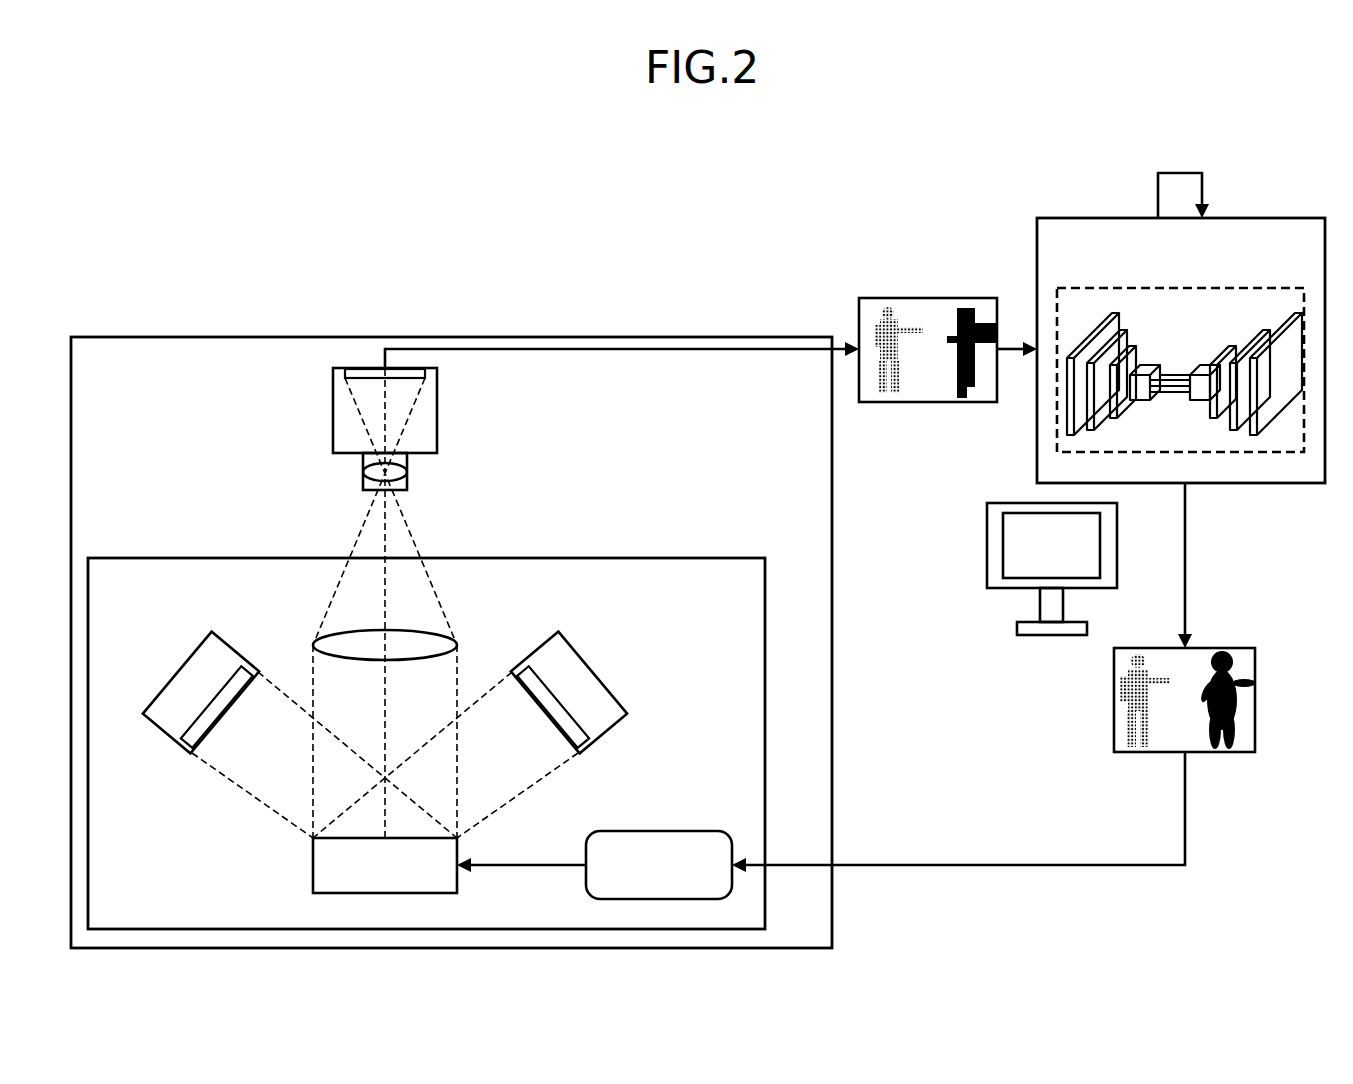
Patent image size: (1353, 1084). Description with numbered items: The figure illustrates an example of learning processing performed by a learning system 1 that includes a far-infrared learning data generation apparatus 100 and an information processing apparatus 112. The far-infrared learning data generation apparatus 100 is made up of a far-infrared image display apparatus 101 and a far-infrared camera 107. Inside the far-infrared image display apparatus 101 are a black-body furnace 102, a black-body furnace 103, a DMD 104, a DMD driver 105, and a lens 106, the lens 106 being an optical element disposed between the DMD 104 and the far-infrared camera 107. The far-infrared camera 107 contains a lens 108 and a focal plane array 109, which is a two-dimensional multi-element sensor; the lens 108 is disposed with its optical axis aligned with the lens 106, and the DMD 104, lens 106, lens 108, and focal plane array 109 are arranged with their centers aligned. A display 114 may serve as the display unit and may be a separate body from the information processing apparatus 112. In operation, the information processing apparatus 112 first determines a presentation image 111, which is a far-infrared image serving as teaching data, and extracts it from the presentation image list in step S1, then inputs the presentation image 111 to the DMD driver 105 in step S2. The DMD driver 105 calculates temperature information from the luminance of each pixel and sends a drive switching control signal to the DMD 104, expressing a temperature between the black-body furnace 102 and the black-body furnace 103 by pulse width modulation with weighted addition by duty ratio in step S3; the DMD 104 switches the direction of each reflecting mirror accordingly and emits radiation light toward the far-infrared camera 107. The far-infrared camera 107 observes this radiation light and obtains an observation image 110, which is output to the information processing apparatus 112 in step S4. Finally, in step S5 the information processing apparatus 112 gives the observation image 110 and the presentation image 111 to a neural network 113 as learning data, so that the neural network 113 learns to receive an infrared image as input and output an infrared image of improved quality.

The learning system 1 is at (658, 293).
The far-infrared learning data generation apparatus 100 is at (231, 337).
The far-infrared image display apparatus 101 is at (248, 558).
The black-body furnace 102 is at (178, 670).
The black-body furnace 103 is at (597, 676).
The DMD 104 is at (313, 862).
The DMD driver 105 is at (681, 831).
The lens 106 is at (405, 630).
The far-infrared camera 107 is at (333, 422).
The lens 108 is at (407, 470).
The focal plane array (FPA) 109 is at (360, 378).
The observation image 110 is at (920, 298).
The presentation image 111 is at (1233, 648).
The information processing apparatus 112 is at (1272, 218).
The neural network 113 is at (1117, 288).
The display 114 is at (993, 588).
The step S1 is at (1185, 530).
The step S2 is at (923, 865).
The step S3 is at (531, 865).
The step S4 is at (833, 349).
The step S5 is at (1178, 173).